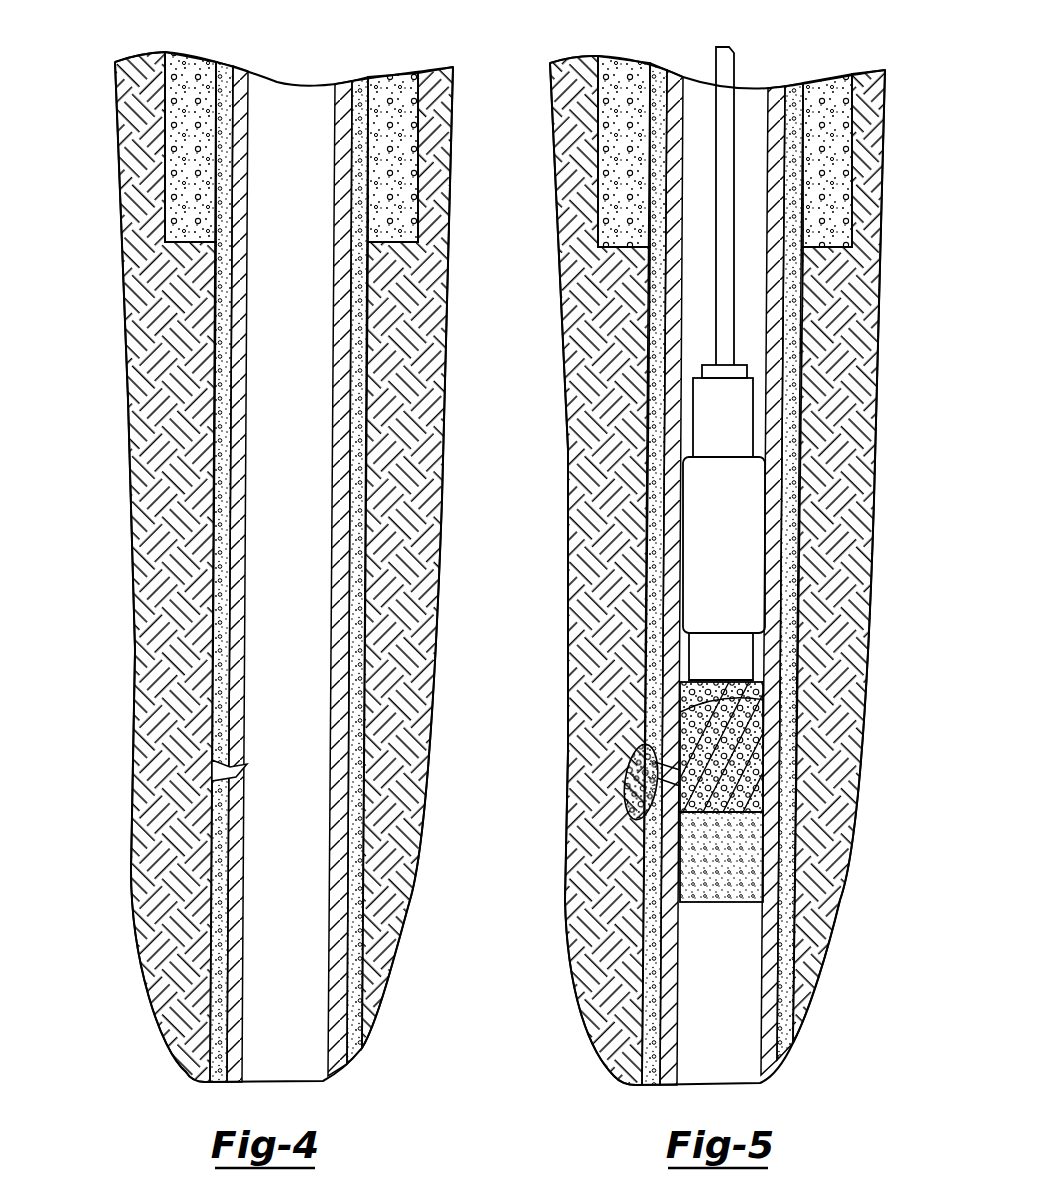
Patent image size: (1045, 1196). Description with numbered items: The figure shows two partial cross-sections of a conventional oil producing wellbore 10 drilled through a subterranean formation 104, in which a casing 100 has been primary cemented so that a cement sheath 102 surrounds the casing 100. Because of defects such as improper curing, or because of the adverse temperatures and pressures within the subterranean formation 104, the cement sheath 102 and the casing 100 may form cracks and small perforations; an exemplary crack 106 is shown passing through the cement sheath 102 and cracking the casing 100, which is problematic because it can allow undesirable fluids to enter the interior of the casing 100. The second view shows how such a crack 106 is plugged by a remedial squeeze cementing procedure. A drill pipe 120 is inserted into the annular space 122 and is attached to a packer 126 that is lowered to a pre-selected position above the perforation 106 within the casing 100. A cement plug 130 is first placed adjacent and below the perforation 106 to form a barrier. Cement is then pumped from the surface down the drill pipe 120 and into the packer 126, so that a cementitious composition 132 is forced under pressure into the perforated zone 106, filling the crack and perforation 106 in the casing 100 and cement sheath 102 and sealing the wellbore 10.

In FIG. 4, the wellbore 10 is at (253, 567).
In FIG. 5, the wellbore 10 is at (693, 544).
In FIG. 4, the casing 100 is at (245, 492).
In FIG. 5, the casing 100 is at (668, 1043).
In FIG. 4, the cement sheath 102 is at (217, 867).
In FIG. 5, the cement sheath 102 is at (653, 443).
In FIG. 4, the subterranean formation 104 is at (150, 710).
In FIG. 5, the subterranean formation 104 is at (717, 570).
In FIG. 4, the crack or perforation 106 is at (195, 773).
In FIG. 5, the crack or perforation 106 is at (678, 774).
In FIG. 5, the drill pipe 120 is at (726, 117).
In FIG. 5, the annular space 122 is at (697, 113).
In FIG. 5, the packer 126 is at (705, 380).
In FIG. 5, the cement plug 130 is at (722, 887).
In FIG. 5, the cementitious composition 132 is at (643, 817).